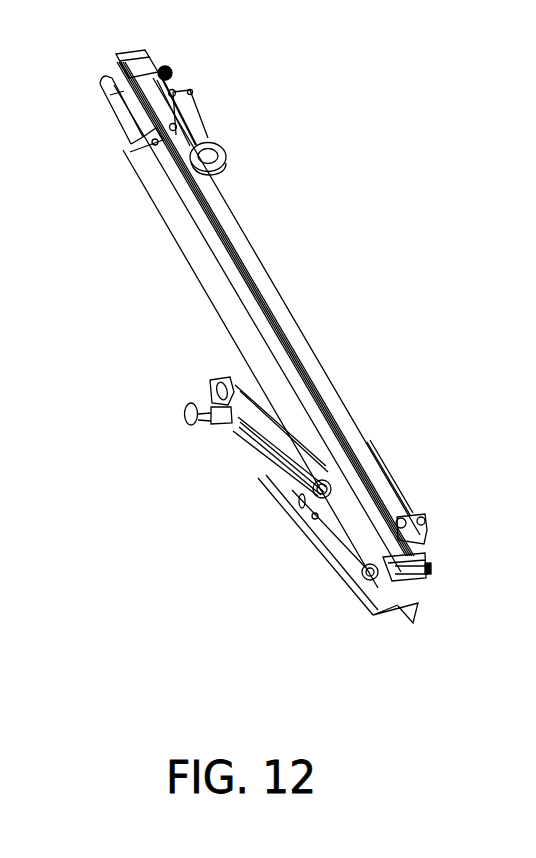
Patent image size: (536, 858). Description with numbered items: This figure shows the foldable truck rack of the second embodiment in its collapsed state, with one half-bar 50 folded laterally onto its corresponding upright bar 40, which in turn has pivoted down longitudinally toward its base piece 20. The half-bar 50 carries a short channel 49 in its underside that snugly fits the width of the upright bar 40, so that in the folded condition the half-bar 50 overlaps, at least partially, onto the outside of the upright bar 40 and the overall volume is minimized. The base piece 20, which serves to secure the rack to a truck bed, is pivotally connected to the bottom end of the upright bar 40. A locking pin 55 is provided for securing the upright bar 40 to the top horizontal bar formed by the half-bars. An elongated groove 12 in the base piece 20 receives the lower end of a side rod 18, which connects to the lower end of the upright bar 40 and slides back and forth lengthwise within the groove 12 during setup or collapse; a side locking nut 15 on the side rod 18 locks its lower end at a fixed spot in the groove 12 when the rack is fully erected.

The elongated groove 12 is at (280, 463).
The side locking nut 15 is at (220, 426).
The side rod 18 is at (213, 378).
The base piece 20 is at (331, 537).
The upright bar 40 is at (193, 242).
The short channel 49 is at (112, 74).
The half-bar 50 is at (340, 385).
The locking pin 55 is at (237, 173).